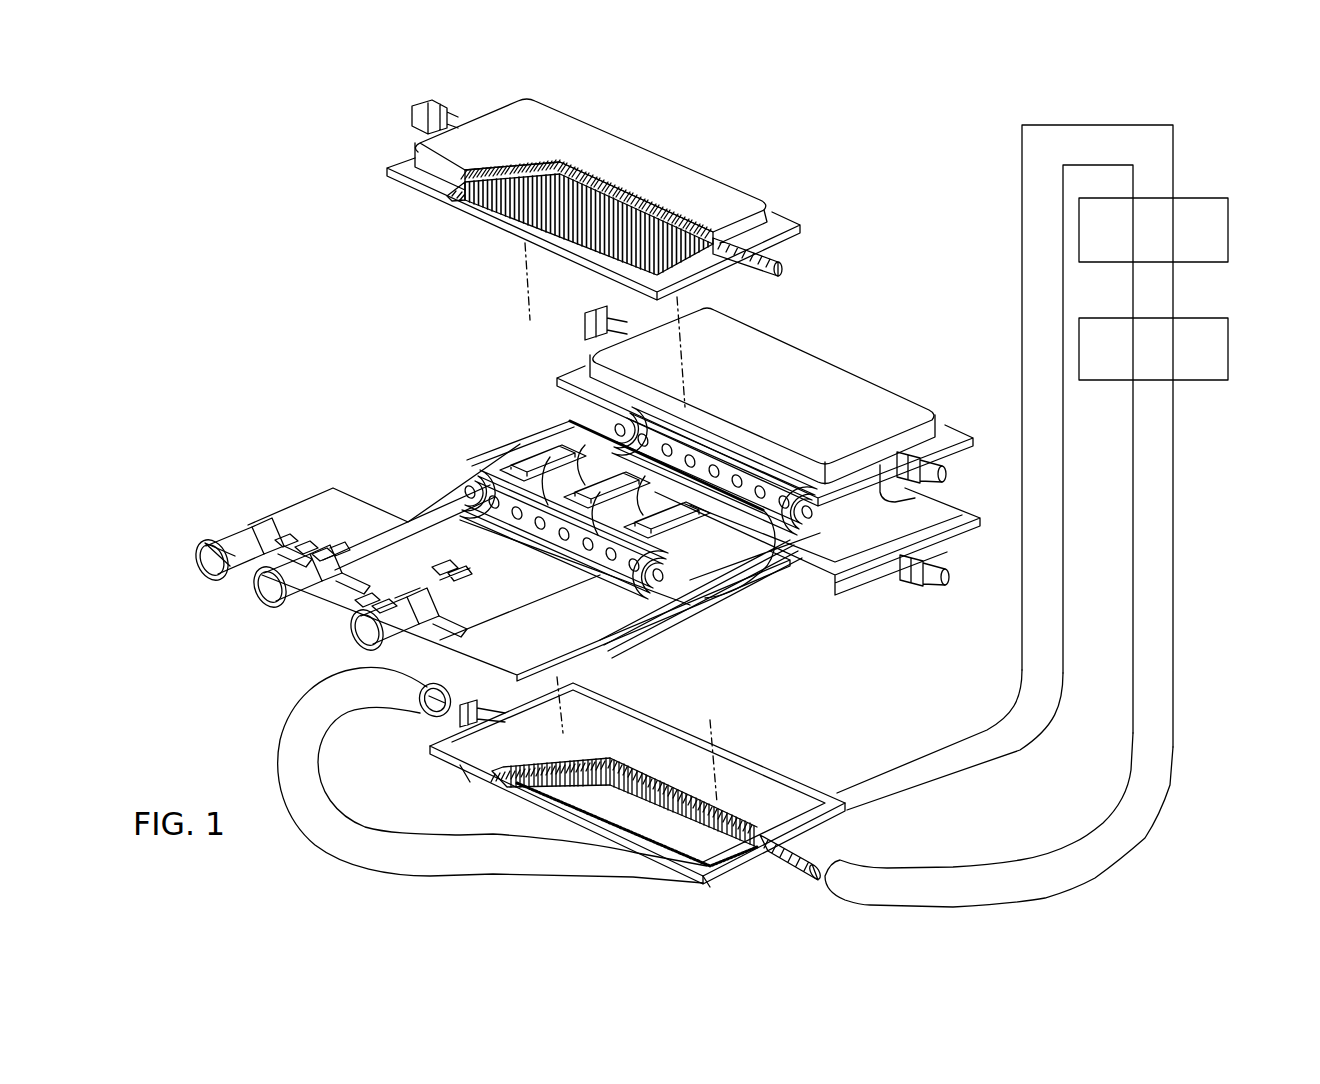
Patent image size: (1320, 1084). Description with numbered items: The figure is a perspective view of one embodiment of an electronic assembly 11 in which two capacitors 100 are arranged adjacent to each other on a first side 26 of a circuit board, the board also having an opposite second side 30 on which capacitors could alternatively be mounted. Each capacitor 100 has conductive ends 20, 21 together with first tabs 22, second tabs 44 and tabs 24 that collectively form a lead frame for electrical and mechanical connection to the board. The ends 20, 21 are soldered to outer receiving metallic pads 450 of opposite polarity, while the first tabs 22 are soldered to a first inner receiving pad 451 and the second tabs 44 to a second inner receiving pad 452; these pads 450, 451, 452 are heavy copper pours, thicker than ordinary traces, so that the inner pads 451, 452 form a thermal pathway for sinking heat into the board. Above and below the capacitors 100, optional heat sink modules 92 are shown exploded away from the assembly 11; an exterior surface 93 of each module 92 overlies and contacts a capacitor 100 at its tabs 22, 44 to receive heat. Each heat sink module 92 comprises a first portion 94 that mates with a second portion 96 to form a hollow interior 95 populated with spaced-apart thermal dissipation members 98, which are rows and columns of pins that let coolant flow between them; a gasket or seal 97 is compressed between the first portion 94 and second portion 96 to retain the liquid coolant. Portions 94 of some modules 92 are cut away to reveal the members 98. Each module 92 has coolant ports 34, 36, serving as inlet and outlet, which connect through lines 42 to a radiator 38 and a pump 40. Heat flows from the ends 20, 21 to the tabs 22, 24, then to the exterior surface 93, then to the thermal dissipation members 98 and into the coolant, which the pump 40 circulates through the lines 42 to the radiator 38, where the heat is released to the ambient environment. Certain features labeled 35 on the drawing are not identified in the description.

The electronic assembly 11 is at (257, 360).
The conductive end 20 is at (643, 499).
The conductive end 21 is at (550, 418).
The first tab 22 is at (525, 455).
The tab 24 is at (740, 530).
The first side 26 is at (653, 620).
The second side 30 is at (920, 592).
The coolant port 34 is at (864, 573).
The holes 35 is at (690, 463).
The coolant port 36 is at (408, 116).
The radiator 38 is at (1228, 320).
The pump 40 is at (1228, 200).
The lines 42 is at (1038, 370).
The second tab 44 is at (588, 447).
The heat sink module 92 is at (640, 168).
The exterior surface 93 is at (720, 275).
The first portion 94 is at (548, 128).
The interior 95 is at (660, 205).
The second portion 96 is at (422, 190).
The gasket or seal 97 is at (472, 200).
The thermal dissipation members 98 is at (695, 240).
The capacitor 100 is at (525, 433).
The outer receiving metallic pad 450 is at (883, 470).
The first inner receiving pad 451 is at (743, 587).
The second inner receiving pad 452 is at (710, 603).